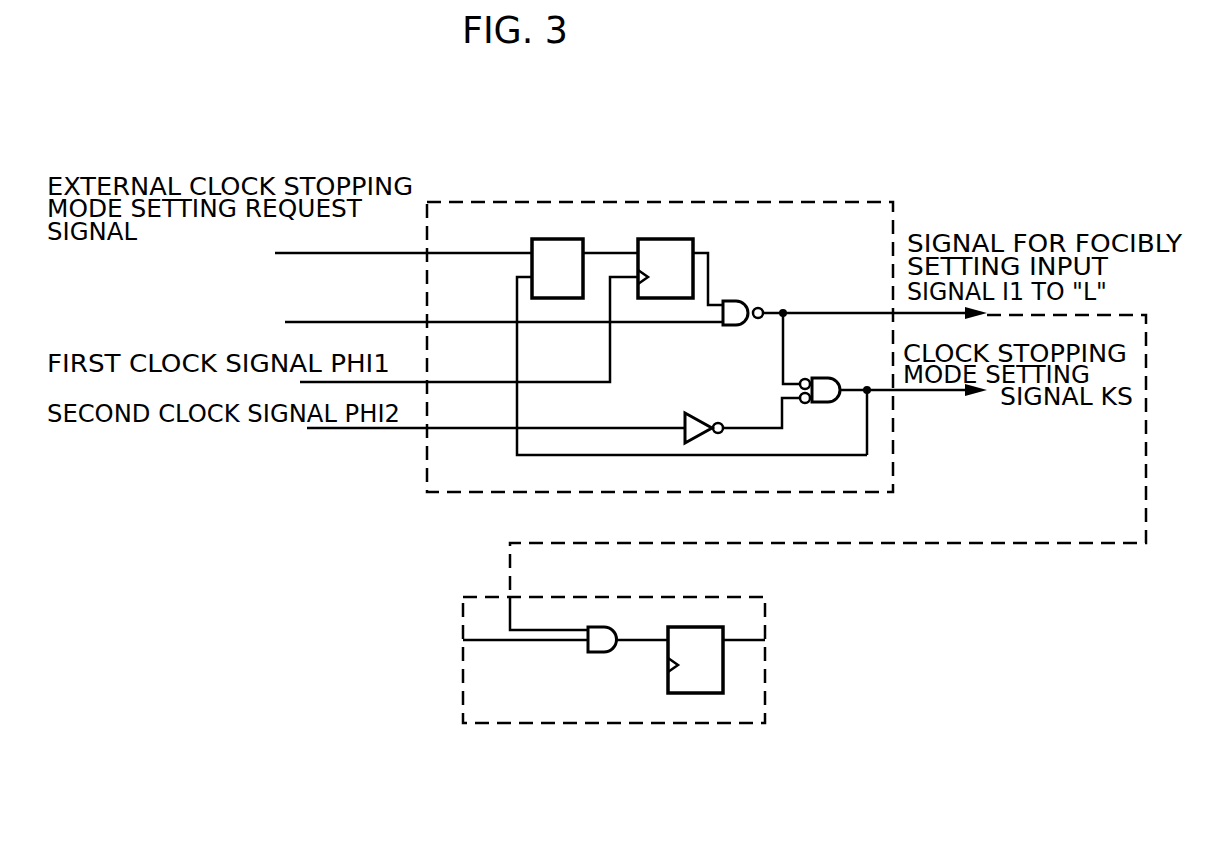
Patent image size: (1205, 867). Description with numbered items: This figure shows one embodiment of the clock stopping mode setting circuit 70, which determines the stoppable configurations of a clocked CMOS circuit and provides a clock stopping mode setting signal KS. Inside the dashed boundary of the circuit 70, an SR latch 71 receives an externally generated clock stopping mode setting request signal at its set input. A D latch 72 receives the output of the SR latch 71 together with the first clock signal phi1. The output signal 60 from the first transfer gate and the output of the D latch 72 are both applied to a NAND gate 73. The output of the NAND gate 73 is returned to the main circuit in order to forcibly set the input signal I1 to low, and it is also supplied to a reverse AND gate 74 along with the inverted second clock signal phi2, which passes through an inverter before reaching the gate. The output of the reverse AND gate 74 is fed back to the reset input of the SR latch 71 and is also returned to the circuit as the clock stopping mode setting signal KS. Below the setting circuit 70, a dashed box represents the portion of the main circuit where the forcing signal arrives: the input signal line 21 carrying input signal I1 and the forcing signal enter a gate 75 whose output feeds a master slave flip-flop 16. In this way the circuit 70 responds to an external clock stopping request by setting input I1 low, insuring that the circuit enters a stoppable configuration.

The clock stopping mode setting circuit 70 is at (660, 317).
The SR latch 71 is at (570, 237).
The D latch 72 is at (668, 237).
The NAND gate 73 is at (740, 297).
The reverse AND gate 74 is at (823, 371).
The AND gate 75 is at (605, 626).
The master slave flip-flop 16 is at (700, 627).
The input signal line 21 is at (510, 640).
The output signal 60 is at (385, 307).